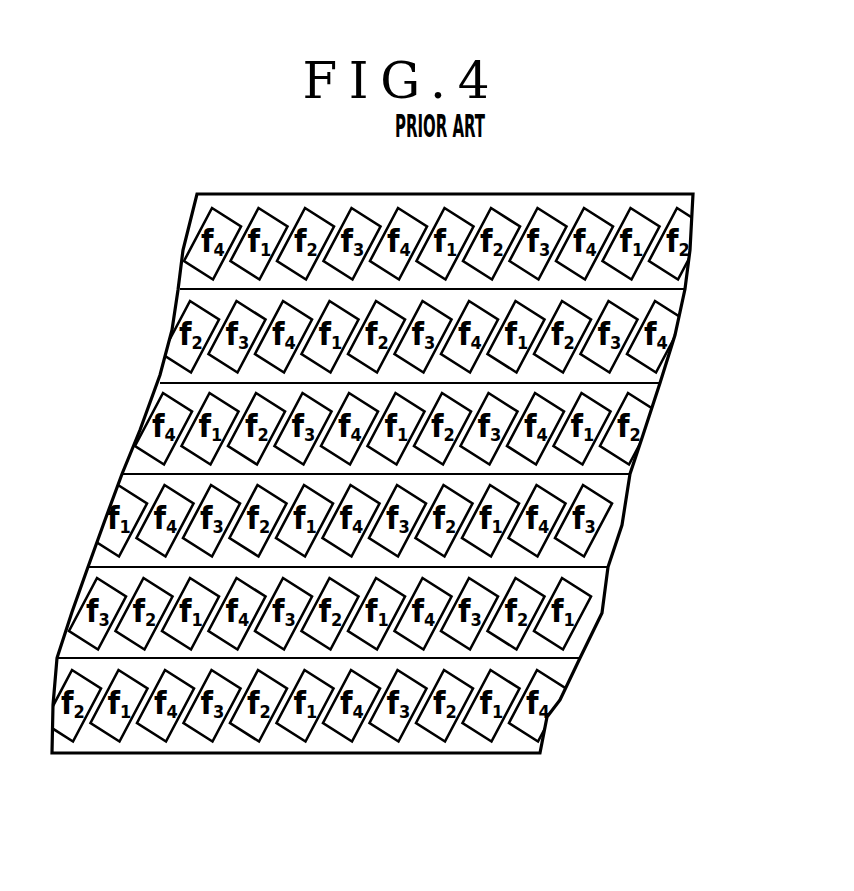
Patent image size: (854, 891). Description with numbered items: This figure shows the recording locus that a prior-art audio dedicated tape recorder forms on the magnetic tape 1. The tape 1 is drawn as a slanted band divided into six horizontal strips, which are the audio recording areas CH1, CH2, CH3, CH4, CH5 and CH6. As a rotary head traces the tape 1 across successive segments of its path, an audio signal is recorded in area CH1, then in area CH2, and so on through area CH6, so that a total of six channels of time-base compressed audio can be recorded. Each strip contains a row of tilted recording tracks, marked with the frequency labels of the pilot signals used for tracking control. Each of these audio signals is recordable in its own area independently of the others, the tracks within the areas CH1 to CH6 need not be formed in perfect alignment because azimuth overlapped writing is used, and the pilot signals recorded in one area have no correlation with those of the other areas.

The magnetic tape 1 is at (283, 194).
The audio recording area CH1 is at (547, 717).
The audio recording area CH2 is at (602, 613).
The audio recording area CH3 is at (622, 525).
The audio recording area CH4 is at (643, 435).
The audio recording area CH5 is at (668, 345).
The audio recording area CH6 is at (688, 258).